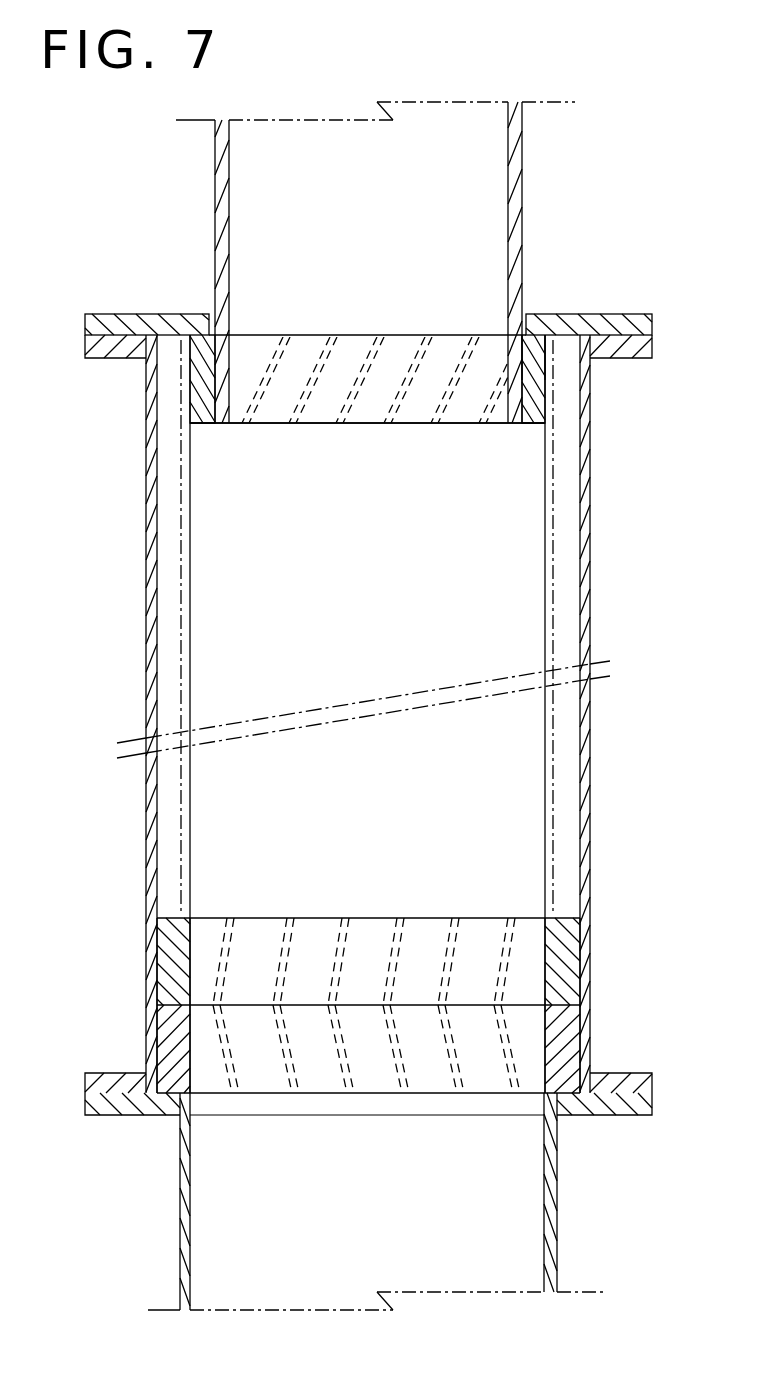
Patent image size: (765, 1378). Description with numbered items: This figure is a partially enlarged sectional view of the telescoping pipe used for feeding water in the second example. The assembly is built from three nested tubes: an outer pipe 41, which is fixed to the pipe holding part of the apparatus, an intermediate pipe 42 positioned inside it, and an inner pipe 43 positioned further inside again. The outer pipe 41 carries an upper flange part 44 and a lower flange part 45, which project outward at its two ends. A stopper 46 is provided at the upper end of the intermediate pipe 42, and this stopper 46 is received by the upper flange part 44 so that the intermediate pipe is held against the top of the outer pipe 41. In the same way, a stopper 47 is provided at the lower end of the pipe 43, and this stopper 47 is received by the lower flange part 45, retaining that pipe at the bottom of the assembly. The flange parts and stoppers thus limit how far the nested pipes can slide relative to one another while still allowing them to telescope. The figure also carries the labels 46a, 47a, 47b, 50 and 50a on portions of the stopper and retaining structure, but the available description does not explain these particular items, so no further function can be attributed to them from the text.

The outer pipe 41 is at (144, 694).
The intermediate pipe 42 is at (178, 1192).
The inner pipe 43 is at (212, 200).
The upper flange part 44 is at (121, 331).
The lower flange part 45 is at (122, 1106).
The stopper 46 is at (165, 941).
The upper filter mesh layers 46a is at (448, 967).
The stopper 47 is at (540, 358).
The sleeve upper portion 47a is at (555, 297).
The sleeve bottom portion 47b is at (530, 414).
The lower filter element holder 50 is at (566, 1031).
The lower filter mesh layers 50a is at (455, 1015).